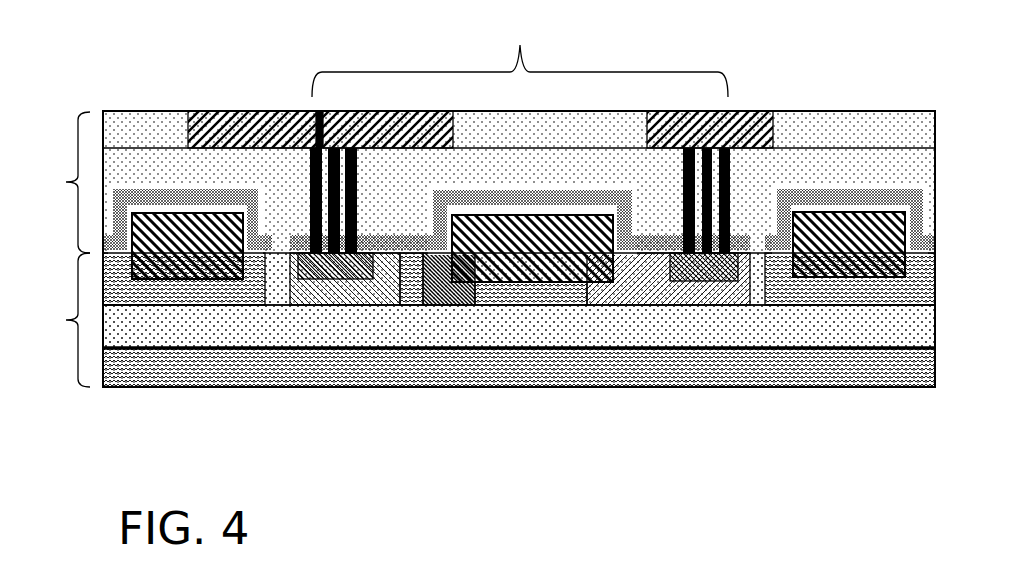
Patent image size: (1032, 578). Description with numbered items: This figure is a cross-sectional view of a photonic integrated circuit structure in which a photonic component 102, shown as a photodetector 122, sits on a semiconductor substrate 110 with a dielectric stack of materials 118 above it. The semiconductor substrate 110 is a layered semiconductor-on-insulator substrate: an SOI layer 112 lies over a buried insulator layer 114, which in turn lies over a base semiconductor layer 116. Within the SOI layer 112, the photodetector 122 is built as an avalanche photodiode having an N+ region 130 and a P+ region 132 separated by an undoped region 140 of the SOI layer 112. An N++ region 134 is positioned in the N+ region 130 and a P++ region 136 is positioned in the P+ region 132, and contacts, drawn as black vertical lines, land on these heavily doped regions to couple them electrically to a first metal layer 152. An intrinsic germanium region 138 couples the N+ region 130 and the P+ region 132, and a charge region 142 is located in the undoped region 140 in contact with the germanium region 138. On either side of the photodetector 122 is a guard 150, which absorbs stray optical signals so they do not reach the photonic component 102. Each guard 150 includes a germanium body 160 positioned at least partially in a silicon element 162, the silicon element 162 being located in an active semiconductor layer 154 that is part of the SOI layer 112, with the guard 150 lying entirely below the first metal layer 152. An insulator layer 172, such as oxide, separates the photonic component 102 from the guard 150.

The photonic component 102 is at (520, 52).
The photodetector 122 is at (520, 52).
The semiconductor substrate 110 is at (53, 320).
The SOI layer 112 is at (519, 368).
The buried insulator layer 114 is at (895, 330).
The base semiconductor layer 116 is at (137, 362).
The dielectric stack of materials 118 is at (53, 182).
The N+ region 130 is at (387, 285).
The P+ region 132 is at (608, 298).
The N++ region 134 is at (343, 265).
The P++ region 136 is at (688, 282).
The germanium region 138 is at (522, 253).
The undoped region 140 is at (537, 300).
The charge region 142 is at (447, 292).
The guard 150 is at (165, 213).
The first metal layer 152 is at (237, 123).
The active semiconductor layer 154 is at (157, 295).
The germanium body 160 is at (222, 225).
The silicon element 162 is at (218, 297).
The insulator layer 172 is at (281, 287).